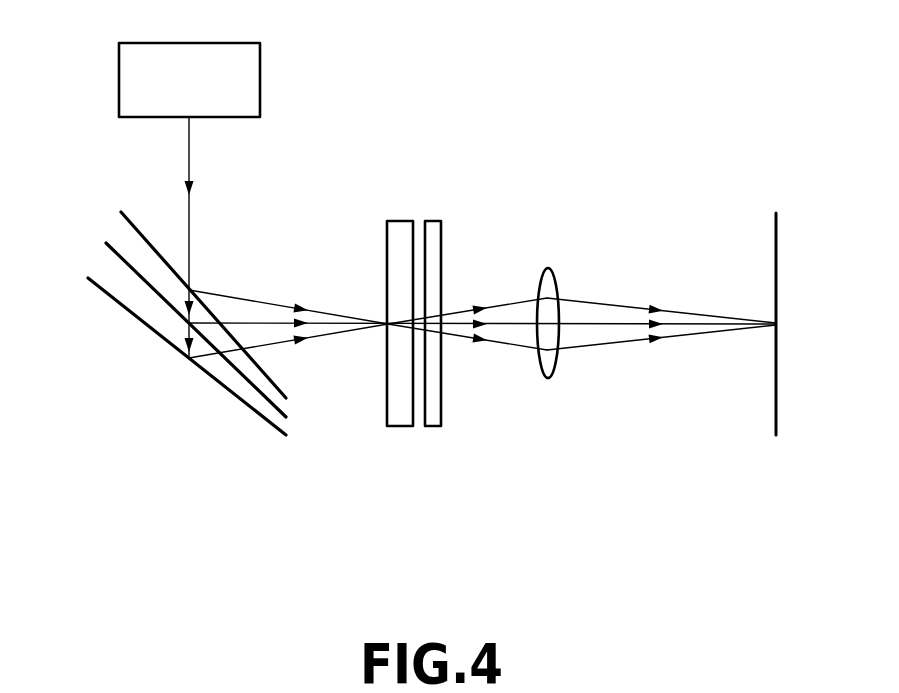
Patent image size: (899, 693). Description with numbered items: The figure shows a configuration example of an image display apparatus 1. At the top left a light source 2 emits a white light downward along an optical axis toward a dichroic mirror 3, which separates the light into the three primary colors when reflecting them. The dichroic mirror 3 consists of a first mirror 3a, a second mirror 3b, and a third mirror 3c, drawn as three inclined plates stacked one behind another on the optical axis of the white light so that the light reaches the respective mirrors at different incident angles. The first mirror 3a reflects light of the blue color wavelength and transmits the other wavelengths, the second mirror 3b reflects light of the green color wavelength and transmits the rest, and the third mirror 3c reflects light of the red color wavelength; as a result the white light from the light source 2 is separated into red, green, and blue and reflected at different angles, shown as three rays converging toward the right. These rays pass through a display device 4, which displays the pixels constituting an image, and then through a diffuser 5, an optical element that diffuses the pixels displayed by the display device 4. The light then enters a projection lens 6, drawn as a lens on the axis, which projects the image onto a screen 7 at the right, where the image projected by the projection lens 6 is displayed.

The image display apparatus 1 is at (532, 178).
The light source 2 is at (262, 70).
The dichroic mirror 3 is at (164, 310).
The first mirror 3a is at (137, 230).
The second mirror 3b is at (114, 250).
The third mirror 3c is at (114, 301).
The display device 4 is at (400, 232).
The diffuser 5 is at (435, 232).
The projection lens 6 is at (548, 363).
The screen 7 is at (777, 247).